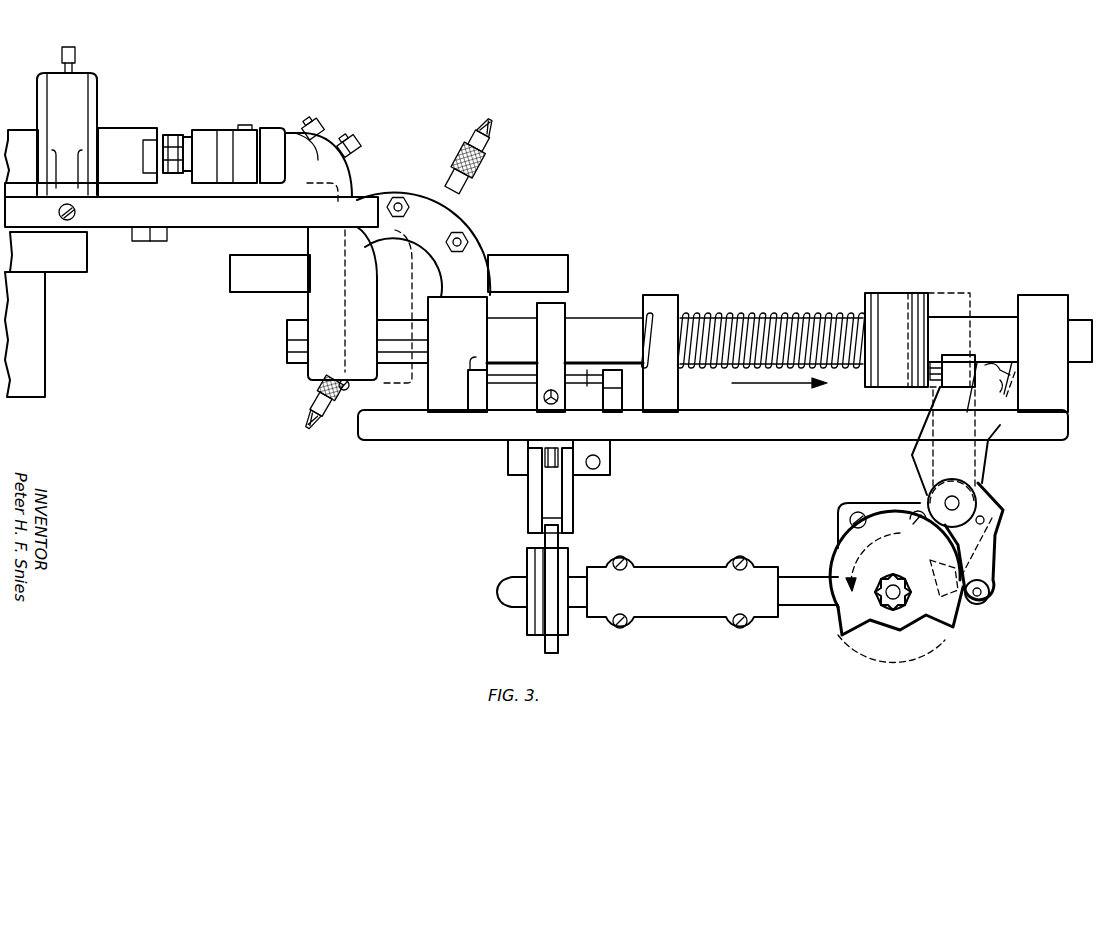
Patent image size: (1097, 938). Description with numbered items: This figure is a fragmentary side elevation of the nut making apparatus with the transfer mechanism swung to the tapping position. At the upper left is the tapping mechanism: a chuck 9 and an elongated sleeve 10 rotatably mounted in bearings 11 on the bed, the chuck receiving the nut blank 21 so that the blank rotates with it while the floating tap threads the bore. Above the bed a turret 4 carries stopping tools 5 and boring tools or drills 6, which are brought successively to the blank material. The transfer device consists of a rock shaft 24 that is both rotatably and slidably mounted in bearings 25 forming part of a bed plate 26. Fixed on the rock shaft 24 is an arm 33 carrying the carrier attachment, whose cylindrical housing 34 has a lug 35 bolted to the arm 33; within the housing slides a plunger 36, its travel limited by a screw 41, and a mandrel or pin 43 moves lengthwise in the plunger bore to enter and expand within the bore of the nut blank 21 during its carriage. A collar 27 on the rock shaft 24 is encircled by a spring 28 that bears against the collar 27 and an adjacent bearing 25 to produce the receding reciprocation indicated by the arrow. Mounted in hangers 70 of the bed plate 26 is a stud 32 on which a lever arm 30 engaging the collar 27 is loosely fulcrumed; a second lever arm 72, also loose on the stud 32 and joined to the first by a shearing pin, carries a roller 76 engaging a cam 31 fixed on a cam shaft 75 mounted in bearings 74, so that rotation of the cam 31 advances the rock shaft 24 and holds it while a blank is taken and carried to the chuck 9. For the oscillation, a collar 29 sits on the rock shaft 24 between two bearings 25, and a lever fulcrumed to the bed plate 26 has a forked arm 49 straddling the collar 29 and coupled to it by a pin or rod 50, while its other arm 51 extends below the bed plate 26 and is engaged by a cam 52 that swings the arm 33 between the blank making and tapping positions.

The elongated sleeve 10 is at (22, 143).
The bearings 11 is at (67, 121).
The chuck 9 is at (140, 130).
The mandrel or pin 43 is at (173, 135).
The plunger 36 is at (190, 133).
The cylindrical housing 34 is at (229, 128).
The screw 41 is at (263, 90).
The lug 35 is at (262, 112).
The nut blank 21 is at (191, 212).
The boring tools or drills 6 is at (487, 122).
The turret 4 is at (478, 230).
The arm 33 is at (348, 283).
The stopping tools 5 is at (399, 273).
The bearings 25 is at (760, 353).
The collar 29 is at (551, 357).
The rock shaft 24 is at (232, 393).
The pin or rod 50 is at (587, 378).
The forked arm 49 is at (475, 388).
The bed plate 26 is at (713, 425).
The spring 28 is at (832, 313).
The collar 27 is at (917, 340).
The lever arm 30 is at (958, 365).
The hangers 70 is at (963, 428).
The stud 32 is at (960, 500).
The bearings 74 is at (892, 503).
The cam shaft 75 is at (893, 599).
The cam 31 is at (942, 578).
The lever arm 72 is at (985, 558).
The roller 76 is at (985, 600).
The lever arm 51 is at (555, 497).
The cam 52 is at (553, 636).